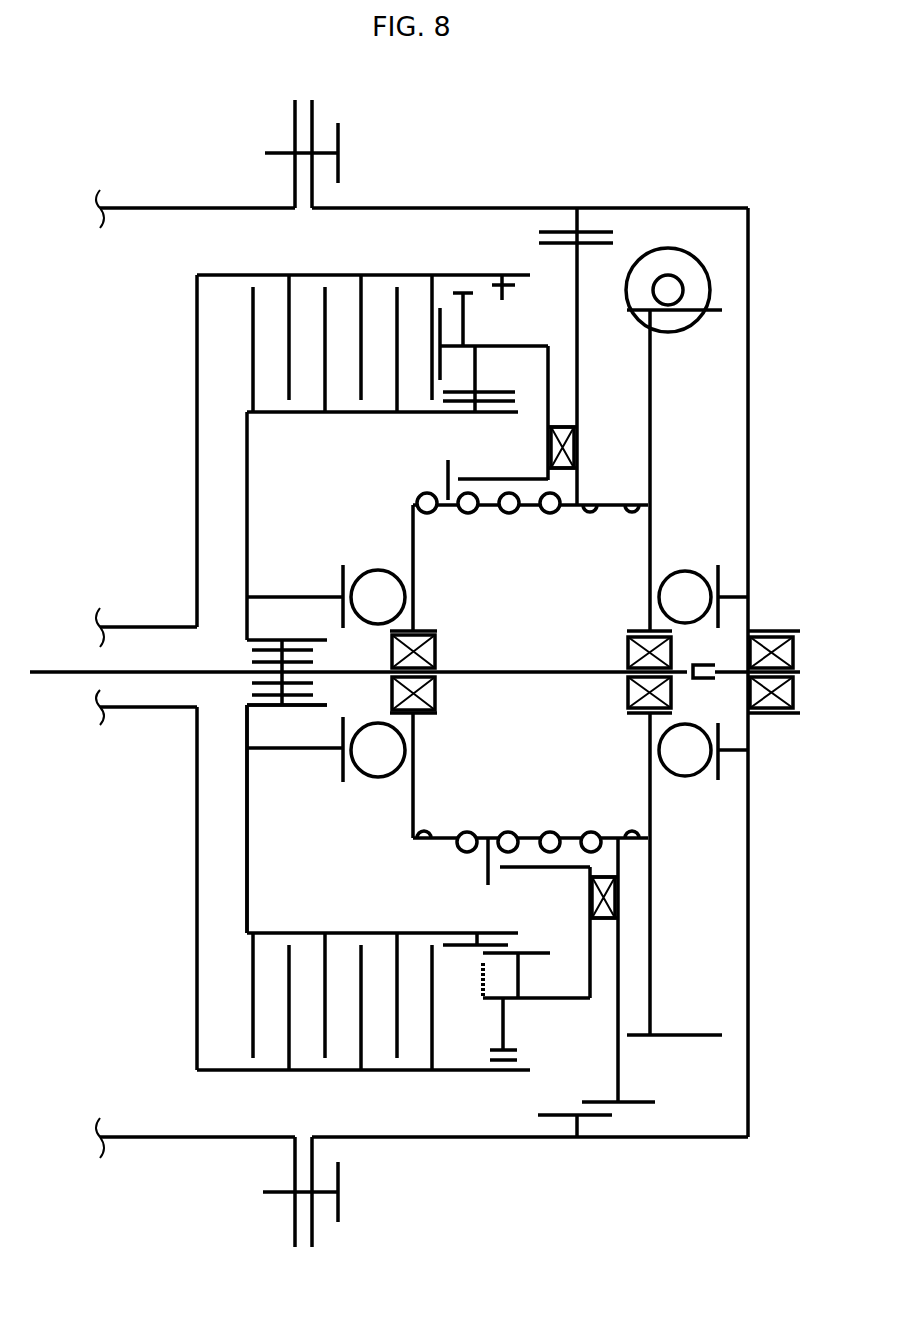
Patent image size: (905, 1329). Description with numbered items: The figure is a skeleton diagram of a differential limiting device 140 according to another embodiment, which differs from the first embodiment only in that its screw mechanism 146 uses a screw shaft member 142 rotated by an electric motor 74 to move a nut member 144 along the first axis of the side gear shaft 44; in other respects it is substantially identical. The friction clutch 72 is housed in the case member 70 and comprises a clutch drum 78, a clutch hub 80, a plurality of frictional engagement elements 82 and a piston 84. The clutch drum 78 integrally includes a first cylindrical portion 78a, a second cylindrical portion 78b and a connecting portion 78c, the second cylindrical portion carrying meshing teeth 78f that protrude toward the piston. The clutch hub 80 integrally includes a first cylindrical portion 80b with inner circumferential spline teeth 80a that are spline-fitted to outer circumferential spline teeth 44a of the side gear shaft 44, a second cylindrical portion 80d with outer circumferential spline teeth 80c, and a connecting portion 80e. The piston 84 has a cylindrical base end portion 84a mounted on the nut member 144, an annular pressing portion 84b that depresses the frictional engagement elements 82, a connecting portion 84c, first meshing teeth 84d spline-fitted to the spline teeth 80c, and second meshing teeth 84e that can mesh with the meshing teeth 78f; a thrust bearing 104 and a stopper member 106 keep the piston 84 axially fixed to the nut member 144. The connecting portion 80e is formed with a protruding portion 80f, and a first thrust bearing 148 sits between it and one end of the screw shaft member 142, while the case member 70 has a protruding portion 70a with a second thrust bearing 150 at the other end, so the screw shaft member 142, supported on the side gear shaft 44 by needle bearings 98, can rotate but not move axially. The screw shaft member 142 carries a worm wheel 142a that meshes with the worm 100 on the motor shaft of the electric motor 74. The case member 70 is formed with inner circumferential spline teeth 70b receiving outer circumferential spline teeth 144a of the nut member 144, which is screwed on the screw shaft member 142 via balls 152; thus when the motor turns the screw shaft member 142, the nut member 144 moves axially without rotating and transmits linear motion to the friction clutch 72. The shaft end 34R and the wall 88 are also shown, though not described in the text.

The differential limiting device 140 is at (601, 95).
The case member 70 is at (184, 208).
The protruding portion 70a is at (718, 772).
The inner circumferential spline teeth 70b is at (549, 243).
The friction clutch 72 is at (544, 1049).
The electric motor 74 is at (667, 288).
The clutch drum 78 is at (337, 662).
The first cylindrical portion 78a is at (123, 627).
The second cylindrical portion 78b is at (345, 275).
The connecting portion 78c is at (197, 402).
The meshing teeth 78f is at (502, 290).
The clutch hub 80 is at (359, 705).
The inner circumferential spline teeth 80a is at (296, 665).
The first cylindrical portion 80b is at (262, 708).
The outer circumferential spline teeth 80c is at (455, 958).
The second cylindrical portion 80d is at (350, 933).
The connecting portion 80e is at (247, 820).
The protruding portion 80f is at (348, 758).
The frictional engagement elements 82 is at (226, 350).
The piston 84 is at (523, 391).
The cylindrical base end portion 84a is at (495, 482).
The annular pressing portion 84b is at (440, 322).
The connecting portion 84c is at (558, 415).
The first meshing teeth 84d is at (499, 400).
The second meshing teeth 84e is at (465, 295).
The case wall 88 is at (719, 266).
The needle bearings 98 is at (428, 696).
The worm 100 is at (665, 292).
The thrust bearing 104 is at (590, 900).
The stopper member 106 is at (488, 872).
The screw shaft member 142 is at (476, 470).
The worm wheel 142a is at (692, 300).
The nut member 144 is at (562, 799).
The outer circumferential spline teeth 144a is at (651, 1122).
The screw mechanism 146 is at (475, 544).
The first thrust bearing 148 is at (344, 590).
The second thrust bearing 150 is at (679, 590).
The balls 152 is at (549, 512).
The rear output shaft end 34R is at (720, 678).
The side gear shaft 44 is at (415, 700).
The outer circumferential spline teeth 44a is at (262, 645).